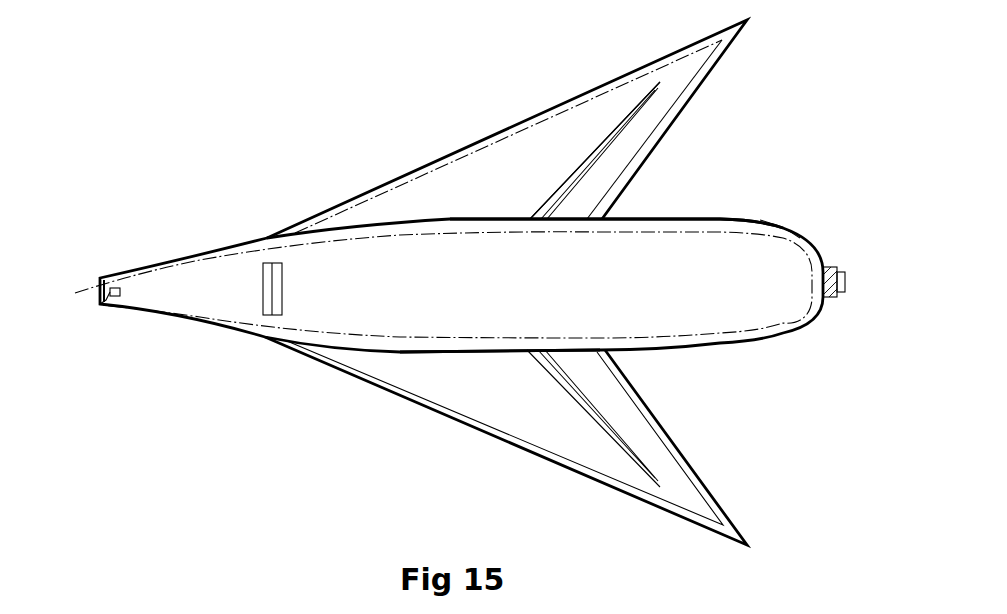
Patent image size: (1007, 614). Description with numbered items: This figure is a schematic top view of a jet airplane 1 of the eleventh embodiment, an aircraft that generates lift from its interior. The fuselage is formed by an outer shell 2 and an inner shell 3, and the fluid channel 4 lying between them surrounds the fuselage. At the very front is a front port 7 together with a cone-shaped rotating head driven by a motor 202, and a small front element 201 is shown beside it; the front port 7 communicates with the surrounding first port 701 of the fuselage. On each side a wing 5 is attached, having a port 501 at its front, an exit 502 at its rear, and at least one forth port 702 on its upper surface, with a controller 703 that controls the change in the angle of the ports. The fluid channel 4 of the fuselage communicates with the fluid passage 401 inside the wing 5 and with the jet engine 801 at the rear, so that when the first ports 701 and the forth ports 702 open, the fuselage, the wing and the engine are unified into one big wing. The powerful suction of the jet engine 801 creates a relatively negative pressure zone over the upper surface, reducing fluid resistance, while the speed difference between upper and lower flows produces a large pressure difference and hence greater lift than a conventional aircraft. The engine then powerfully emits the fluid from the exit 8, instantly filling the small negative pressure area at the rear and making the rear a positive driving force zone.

The aircraft body 1 is at (158, 287).
The outer shell 2 is at (662, 220).
The inner shell 3 is at (687, 228).
The fluid channel 4 is at (725, 231).
The wing 5 is at (495, 192).
The front port 7 is at (100, 280).
The exit 8 is at (893, 266).
The nose inlet element 201 is at (106, 292).
The motor 202 is at (106, 297).
The fluid passage 401 is at (543, 408).
The port 501 is at (447, 166).
The exit 502 is at (593, 217).
The first port 701 is at (265, 297).
The forth port 702 is at (597, 210).
The controller 703 is at (272, 280).
The jet engine 801 is at (893, 246).